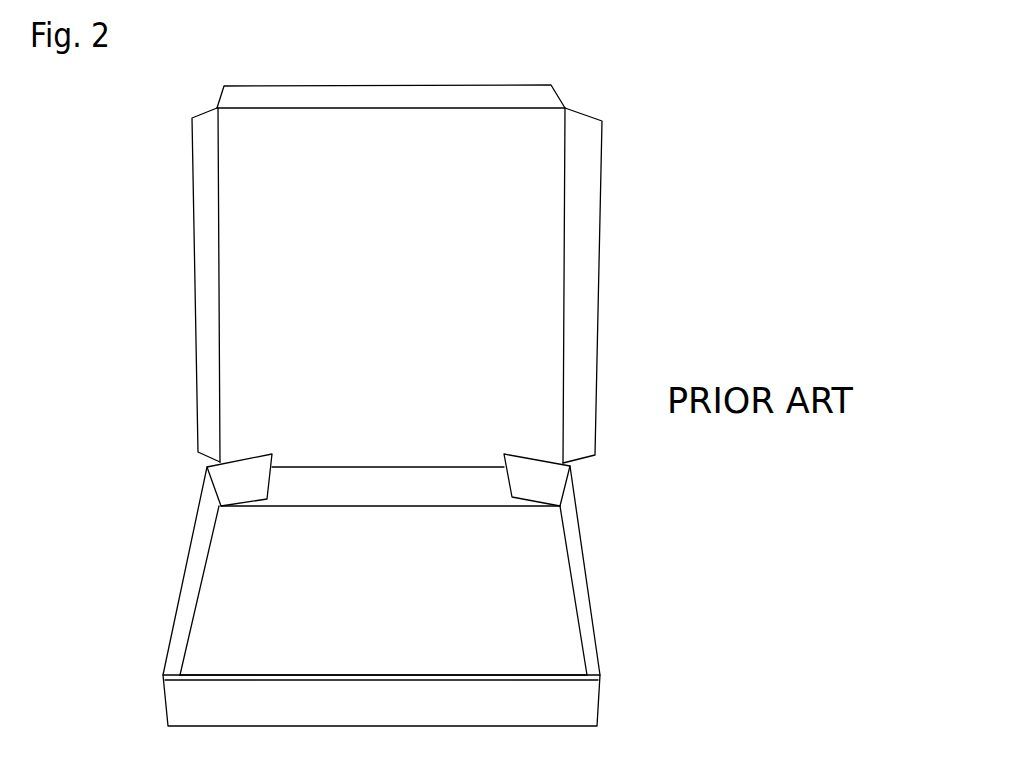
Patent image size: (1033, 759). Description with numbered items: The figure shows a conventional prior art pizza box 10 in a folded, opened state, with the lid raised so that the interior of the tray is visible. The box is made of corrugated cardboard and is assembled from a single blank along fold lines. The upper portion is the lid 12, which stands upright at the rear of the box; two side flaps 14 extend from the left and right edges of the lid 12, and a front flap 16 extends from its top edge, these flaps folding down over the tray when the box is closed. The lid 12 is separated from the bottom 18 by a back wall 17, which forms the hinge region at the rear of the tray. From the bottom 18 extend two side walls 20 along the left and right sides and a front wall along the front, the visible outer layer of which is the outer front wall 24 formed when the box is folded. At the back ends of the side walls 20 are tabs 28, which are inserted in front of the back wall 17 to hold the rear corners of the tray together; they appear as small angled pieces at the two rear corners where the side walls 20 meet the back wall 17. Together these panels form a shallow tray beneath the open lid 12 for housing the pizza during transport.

The pizza box 10 is at (696, 132).
The lid 12 is at (399, 290).
The side flaps 14 is at (205, 227).
The front flap 16 is at (407, 98).
The back wall 17 is at (406, 499).
The bottom 18 is at (406, 600).
The side walls 20 is at (193, 582).
The outer front wall 24 is at (402, 716).
The tabs 28 is at (245, 474).